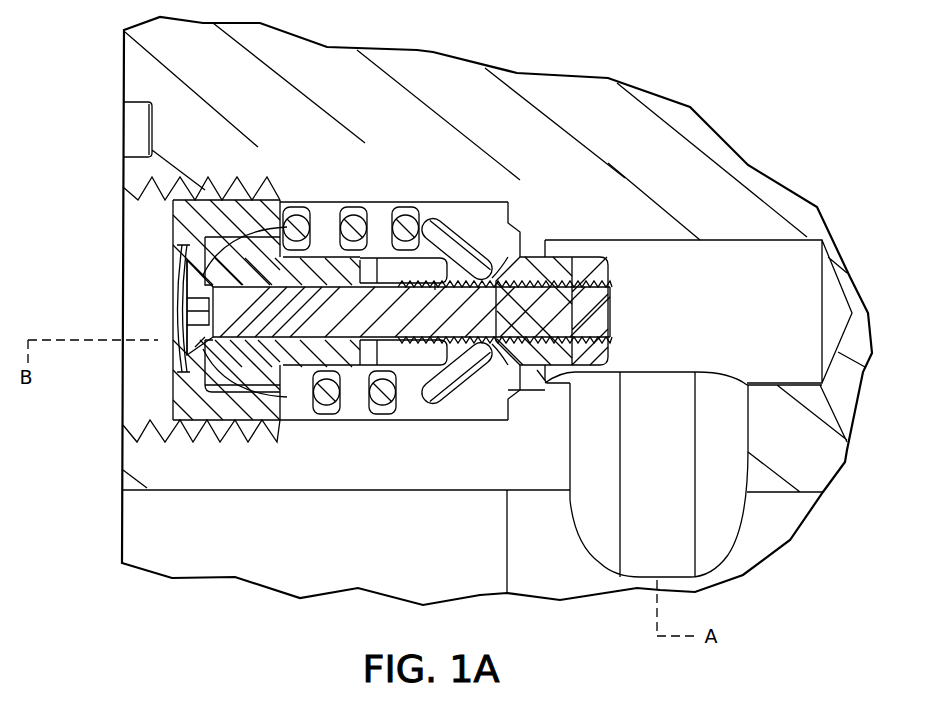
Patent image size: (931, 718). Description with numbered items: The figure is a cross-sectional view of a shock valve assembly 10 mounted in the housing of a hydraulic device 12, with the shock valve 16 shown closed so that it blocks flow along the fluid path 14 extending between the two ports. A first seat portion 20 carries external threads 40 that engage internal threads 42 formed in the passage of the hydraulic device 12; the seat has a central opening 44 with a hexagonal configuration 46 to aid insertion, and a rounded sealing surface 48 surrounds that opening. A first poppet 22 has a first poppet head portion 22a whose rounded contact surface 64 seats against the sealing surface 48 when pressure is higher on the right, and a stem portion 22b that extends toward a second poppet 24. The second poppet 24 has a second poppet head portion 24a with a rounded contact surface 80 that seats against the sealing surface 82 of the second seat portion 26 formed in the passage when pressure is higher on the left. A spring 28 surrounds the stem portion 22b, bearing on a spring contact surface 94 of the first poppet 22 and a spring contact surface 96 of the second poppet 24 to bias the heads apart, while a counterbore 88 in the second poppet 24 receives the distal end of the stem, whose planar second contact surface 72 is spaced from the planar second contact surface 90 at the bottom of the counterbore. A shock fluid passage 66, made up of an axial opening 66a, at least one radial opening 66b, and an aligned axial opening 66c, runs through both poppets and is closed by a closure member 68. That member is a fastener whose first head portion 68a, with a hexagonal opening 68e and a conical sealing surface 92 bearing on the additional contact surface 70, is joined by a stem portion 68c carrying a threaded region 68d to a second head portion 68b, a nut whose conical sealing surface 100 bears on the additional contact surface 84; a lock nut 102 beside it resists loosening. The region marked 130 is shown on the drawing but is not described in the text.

The shock valve assembly 10 is at (497, 92).
The hydraulic device 12 is at (618, 120).
The fluid path 14 is at (488, 243).
The shock valve 16 is at (384, 122).
The first seat portion 20 is at (190, 446).
The first poppet 22 is at (259, 412).
The first poppet head portion 22a is at (257, 488).
The stem portion 22b is at (360, 484).
The second poppet 24 is at (473, 488).
The second poppet head portion 24a is at (505, 225).
The second seat portion 26 is at (547, 413).
The spring 28 is at (347, 490).
The external threads 40 is at (210, 190).
The internal threads 42 is at (125, 192).
The central opening 44 is at (227, 232).
The hexagonal configuration 46 is at (187, 257).
The rounded sealing surface 48 is at (266, 235).
The rounded contact surface 64 is at (245, 405).
The shock fluid passage 66 is at (262, 345).
The axial opening 66a is at (303, 268).
The radial opening 66b is at (362, 275).
The axial opening 66c is at (497, 430).
The shock fluid passage closure member 68 is at (616, 313).
The first head portion 68a is at (193, 283).
The second head portion 68b is at (577, 257).
The stem portion 68c is at (310, 297).
The threaded region 68d is at (607, 289).
The hexagonal opening 68e is at (190, 315).
The additional contact surface 70 is at (182, 340).
The second contact surface 72 is at (425, 228).
The rounded contact surface 80 is at (477, 370).
The sealing surface 82 is at (573, 382).
The additional contact surface 84 is at (558, 247).
The counterbore 88 is at (440, 398).
The second contact surface 90 is at (436, 283).
The conical sealing surface 92 is at (185, 232).
The spring contact surface 94 is at (293, 380).
The spring contact surface 96 is at (403, 372).
The conical sealing surface 100 is at (497, 412).
The lock nut 102 is at (586, 243).
The nut portion 130 is at (583, 348).